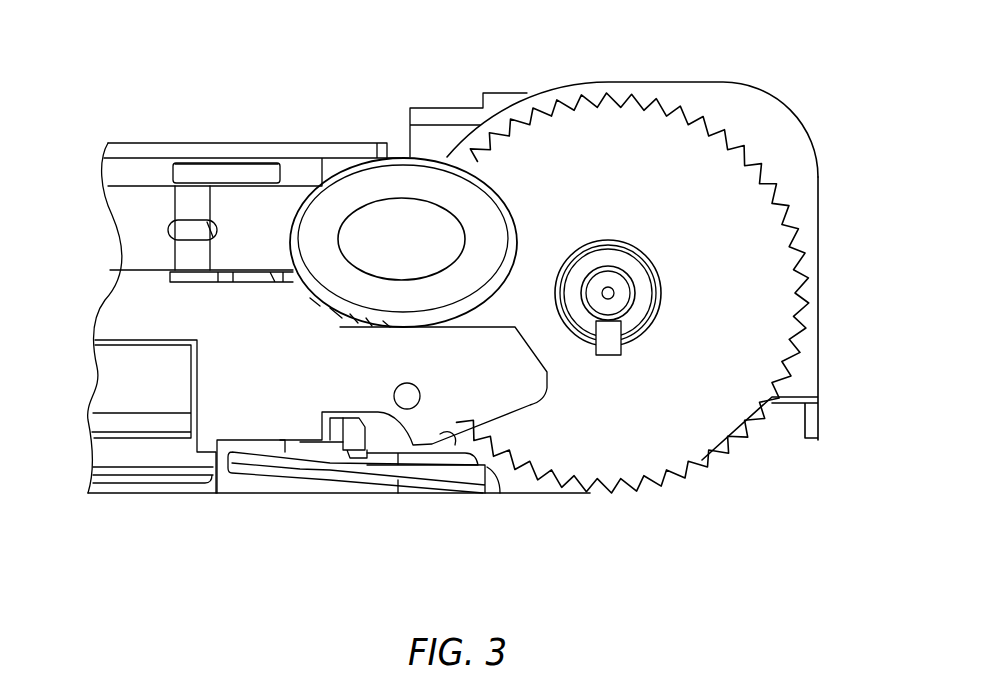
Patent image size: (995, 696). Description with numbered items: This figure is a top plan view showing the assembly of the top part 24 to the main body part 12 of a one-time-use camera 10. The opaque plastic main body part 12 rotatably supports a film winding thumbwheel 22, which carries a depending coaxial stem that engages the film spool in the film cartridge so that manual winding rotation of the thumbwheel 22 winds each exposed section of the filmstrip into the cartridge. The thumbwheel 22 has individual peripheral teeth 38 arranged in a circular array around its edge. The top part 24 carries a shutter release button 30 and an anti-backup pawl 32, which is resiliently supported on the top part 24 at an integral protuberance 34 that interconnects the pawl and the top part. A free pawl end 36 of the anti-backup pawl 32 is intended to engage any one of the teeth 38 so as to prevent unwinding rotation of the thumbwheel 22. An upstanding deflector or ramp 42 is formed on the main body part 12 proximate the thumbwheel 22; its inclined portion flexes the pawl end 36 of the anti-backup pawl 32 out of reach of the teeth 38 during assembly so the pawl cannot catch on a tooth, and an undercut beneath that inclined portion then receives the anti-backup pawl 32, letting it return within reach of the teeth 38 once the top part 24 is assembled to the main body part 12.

The one-time-use camera 10 is at (115, 229).
The main body part 12 is at (760, 84).
The film winding thumbwheel 22 is at (818, 284).
The top part 24 is at (131, 313).
The shutter release button 30 is at (377, 178).
The anti-backup pawl 32 is at (355, 485).
The integral protuberance 34 is at (291, 450).
The free pawl end 36 is at (489, 467).
The peripheral teeth 38 is at (795, 224).
The deflector or ramp 42 is at (351, 428).